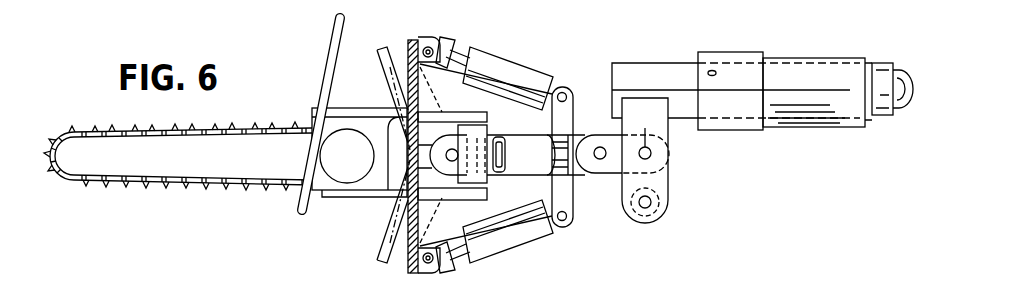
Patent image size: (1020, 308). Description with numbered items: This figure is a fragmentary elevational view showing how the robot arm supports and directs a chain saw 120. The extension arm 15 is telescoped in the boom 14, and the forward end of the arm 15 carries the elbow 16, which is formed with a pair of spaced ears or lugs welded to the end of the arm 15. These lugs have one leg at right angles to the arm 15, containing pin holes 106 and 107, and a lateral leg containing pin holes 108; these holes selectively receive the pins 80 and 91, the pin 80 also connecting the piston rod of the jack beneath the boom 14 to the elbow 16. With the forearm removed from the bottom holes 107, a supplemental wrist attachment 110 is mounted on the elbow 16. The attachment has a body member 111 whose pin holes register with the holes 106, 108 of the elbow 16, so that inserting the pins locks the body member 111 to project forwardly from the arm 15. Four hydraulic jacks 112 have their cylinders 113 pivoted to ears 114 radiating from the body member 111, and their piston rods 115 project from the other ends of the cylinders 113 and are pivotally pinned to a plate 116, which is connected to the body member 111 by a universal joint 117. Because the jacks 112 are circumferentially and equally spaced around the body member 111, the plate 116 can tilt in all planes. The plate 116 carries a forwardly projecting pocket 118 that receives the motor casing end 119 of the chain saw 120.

The boom 14 is at (784, 53).
The extension arm 15 is at (639, 62).
The elbow member 16 is at (672, 190).
The pin 80 is at (647, 124).
The pin 91 is at (606, 153).
The pin hole 106 is at (651, 153).
The pin hole 107 is at (648, 205).
The pin hole 108 is at (603, 167).
The supplemental wrist attachment 110 is at (524, 149).
The body member 111 is at (527, 148).
The hydraulic jacks 112 is at (534, 84).
The cylinders 113 is at (493, 62).
The ears 114 is at (563, 118).
The piston rods 115 is at (460, 52).
The plate 116 is at (410, 250).
The universal joint 117 is at (477, 126).
The pocket 118 is at (340, 199).
The motor casing end 119 is at (348, 126).
The chain saw 120 is at (271, 124).